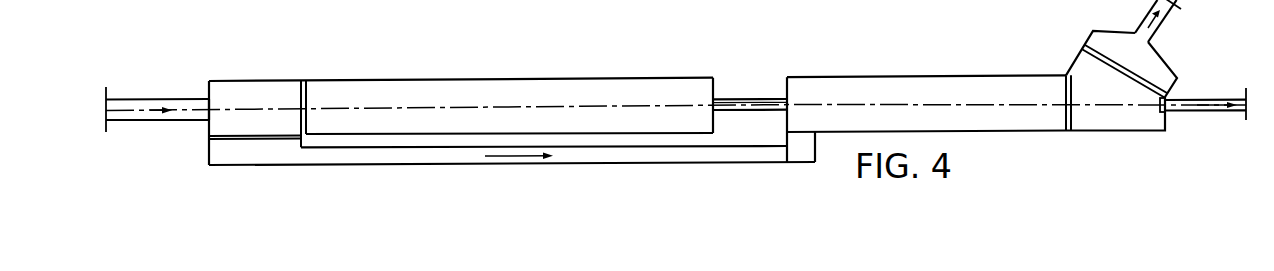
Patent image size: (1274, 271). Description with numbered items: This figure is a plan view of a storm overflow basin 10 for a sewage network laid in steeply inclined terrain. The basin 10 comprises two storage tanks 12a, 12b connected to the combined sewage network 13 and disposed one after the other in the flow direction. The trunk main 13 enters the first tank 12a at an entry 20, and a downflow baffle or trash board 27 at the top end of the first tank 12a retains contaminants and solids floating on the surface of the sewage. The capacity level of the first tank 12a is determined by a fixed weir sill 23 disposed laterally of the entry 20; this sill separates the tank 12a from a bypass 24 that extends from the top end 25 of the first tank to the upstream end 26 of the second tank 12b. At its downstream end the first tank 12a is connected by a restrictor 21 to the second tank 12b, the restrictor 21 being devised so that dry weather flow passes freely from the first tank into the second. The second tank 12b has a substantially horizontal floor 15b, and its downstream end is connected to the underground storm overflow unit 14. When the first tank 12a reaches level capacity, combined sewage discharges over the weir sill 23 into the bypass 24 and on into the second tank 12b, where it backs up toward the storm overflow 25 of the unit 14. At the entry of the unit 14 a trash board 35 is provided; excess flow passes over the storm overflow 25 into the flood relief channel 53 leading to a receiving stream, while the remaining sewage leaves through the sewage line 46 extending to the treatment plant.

The storm overflow basin 10 is at (522, 57).
The first storage tank 12a is at (407, 92).
The second storage tank 12b is at (902, 90).
The combined sewage network 13 is at (185, 116).
The storm overflow unit 14 is at (1120, 65).
The floor of second tank 15b is at (1019, 7).
The entry of trunk main 20 is at (209, 113).
The restrictor 21 is at (755, 107).
The fixed weir sill 23 is at (235, 138).
The bypass 24 is at (418, 152).
The top end of first basin / storm overflow 25 is at (222, 88).
The upstream end of second tank 26 is at (800, 84).
The downflow baffle or trash board 27 is at (305, 92).
The trash board 35 is at (1066, 118).
The sewage line 46 is at (1210, 100).
The flood relief channel 53 is at (1163, 27).